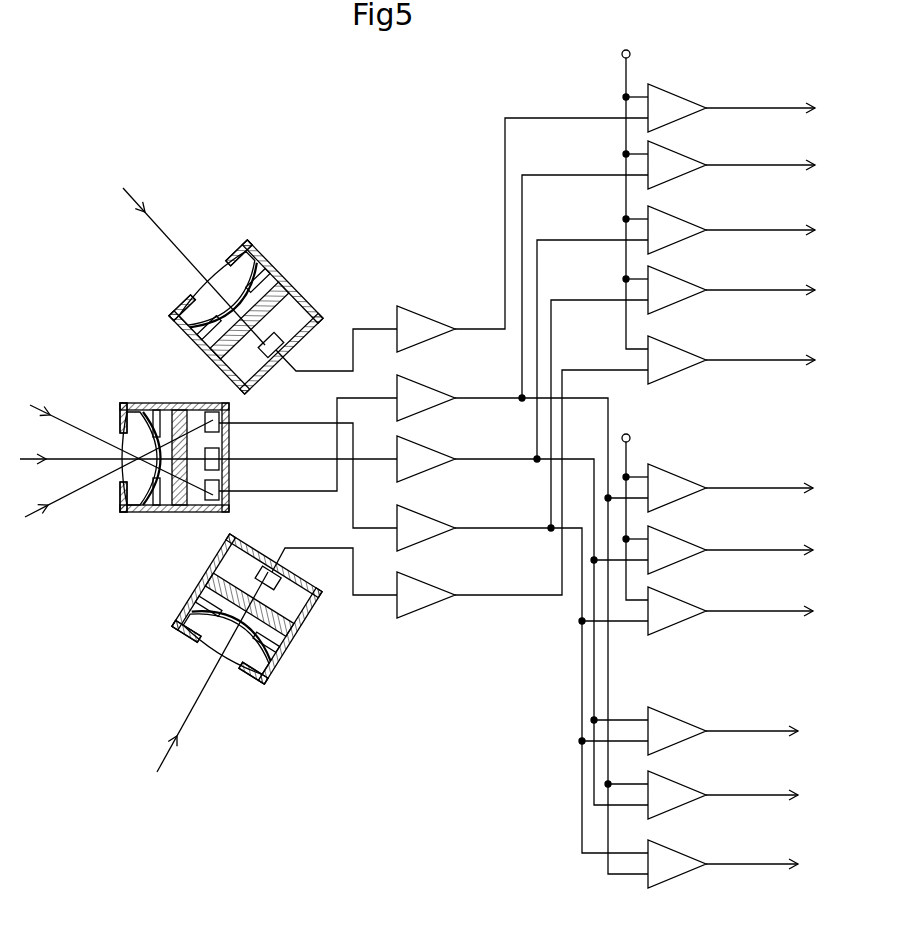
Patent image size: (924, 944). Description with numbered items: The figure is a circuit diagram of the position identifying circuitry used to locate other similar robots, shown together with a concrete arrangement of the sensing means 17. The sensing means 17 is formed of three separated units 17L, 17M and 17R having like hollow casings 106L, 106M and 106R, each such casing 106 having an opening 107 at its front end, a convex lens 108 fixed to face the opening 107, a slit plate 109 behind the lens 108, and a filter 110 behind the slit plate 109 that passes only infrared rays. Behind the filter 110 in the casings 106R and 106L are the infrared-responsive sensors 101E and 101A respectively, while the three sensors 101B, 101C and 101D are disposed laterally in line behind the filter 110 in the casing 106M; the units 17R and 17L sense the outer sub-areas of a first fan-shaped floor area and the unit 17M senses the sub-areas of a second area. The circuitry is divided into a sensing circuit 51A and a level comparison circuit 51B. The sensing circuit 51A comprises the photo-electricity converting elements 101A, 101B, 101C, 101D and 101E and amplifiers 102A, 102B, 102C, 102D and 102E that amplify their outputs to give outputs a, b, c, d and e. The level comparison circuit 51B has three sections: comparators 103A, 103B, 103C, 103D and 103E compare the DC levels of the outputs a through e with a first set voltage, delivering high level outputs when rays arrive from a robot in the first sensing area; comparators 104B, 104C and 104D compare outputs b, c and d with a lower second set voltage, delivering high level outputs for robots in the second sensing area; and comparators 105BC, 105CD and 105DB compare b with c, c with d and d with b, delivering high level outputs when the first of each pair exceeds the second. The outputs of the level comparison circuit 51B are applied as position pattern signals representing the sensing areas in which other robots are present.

The sensing means 17 is at (62, 323).
The right sensing unit 17R is at (176, 262).
The middle sensing unit 17M is at (98, 408).
The left sensing unit 17L is at (180, 608).
The sensing circuit 51A is at (379, 258).
The level comparison circuit 51B is at (688, 464).
The photo-electricity converting element 101A is at (265, 566).
The photo-electricity converting element 101B is at (221, 415).
The photo-electricity converting element 101C is at (221, 452).
The photo-electricity converting element 101D is at (221, 488).
The photo-electricity converting element 101E is at (290, 346).
The amplifier 102A is at (425, 606).
The amplifier 102B is at (425, 539).
The amplifier 102C is at (425, 470).
The amplifier 102D is at (425, 409).
The amplifier 102E is at (425, 340).
The comparator 103A is at (680, 349).
The comparator 103B is at (680, 279).
The comparator 103C is at (680, 219).
The comparator 103D is at (680, 154).
The comparator 103E is at (680, 97).
The comparator 104B is at (680, 600).
The comparator 104C is at (680, 539).
The comparator 104D is at (680, 477).
The comparator 105BC is at (680, 720).
The comparator 105CD is at (680, 784).
The comparator 105DB is at (680, 853).
The hollow casing 106 is at (200, 350).
The hollow casing 106R is at (232, 317).
The hollow casing 106M is at (168, 512).
The hollow casing 106L is at (305, 617).
The opening 107 is at (120, 477).
The convex lens 108 is at (130, 510).
The slit plate 109 is at (150, 402).
The filter 110 is at (215, 355).